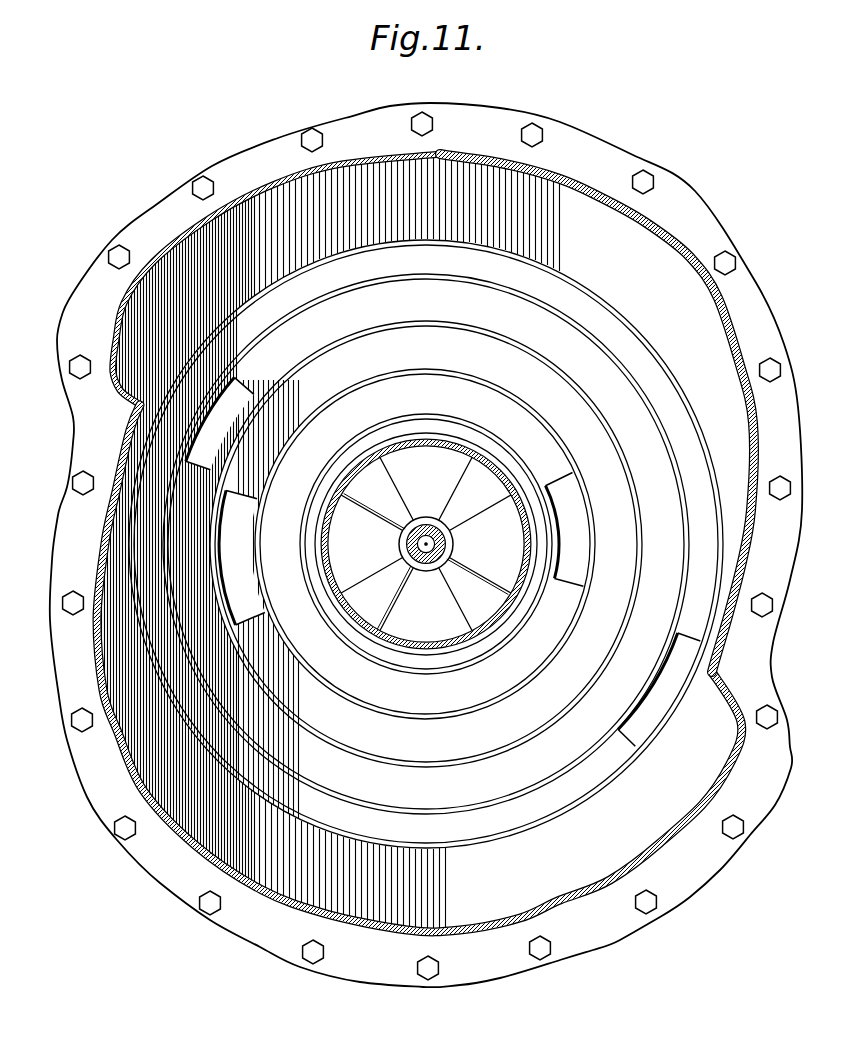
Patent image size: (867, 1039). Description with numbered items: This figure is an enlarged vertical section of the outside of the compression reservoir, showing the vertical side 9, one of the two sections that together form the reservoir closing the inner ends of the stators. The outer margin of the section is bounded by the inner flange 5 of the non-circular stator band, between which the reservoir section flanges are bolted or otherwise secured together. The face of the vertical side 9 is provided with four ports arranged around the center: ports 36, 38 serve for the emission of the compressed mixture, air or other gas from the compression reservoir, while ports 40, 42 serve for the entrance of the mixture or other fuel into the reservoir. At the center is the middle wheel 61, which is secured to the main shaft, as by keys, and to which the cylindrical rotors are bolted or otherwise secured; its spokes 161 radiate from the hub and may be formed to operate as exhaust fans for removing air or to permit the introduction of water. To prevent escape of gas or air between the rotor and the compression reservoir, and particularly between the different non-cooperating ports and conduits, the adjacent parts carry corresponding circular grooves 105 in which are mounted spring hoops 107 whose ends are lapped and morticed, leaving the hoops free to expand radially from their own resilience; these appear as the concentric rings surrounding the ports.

The inner flange 5 is at (610, 162).
The vertical side of compression reservoir 9 is at (425, 543).
The port 36 is at (670, 668).
The port 38 is at (237, 397).
The port 40 is at (578, 563).
The port 42 is at (237, 505).
The middle wheel 61 is at (414, 441).
The circular grooves 105 is at (610, 317).
The spring hoops 107 is at (545, 270).
The spokes 161 is at (457, 602).